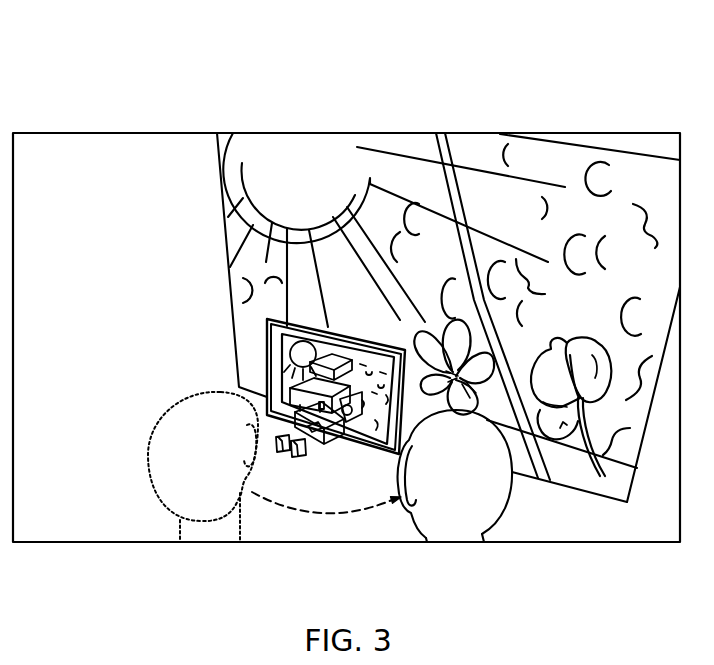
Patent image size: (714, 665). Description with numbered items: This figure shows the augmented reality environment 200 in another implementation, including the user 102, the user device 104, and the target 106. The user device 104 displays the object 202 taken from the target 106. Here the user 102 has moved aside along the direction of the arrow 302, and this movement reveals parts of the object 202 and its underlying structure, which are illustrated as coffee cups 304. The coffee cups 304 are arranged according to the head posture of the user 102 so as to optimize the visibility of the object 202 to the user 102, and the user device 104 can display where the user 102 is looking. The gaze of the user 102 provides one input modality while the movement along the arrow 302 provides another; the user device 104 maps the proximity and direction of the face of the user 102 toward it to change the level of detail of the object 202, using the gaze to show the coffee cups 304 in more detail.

The augmented reality environment 200 is at (92, 80).
The target 106 is at (609, 133).
The user device 104 is at (266, 333).
The object 202 is at (325, 441).
The coffee cups 304 is at (294, 458).
The user 102 is at (200, 393).
The arrow 302 is at (320, 513).